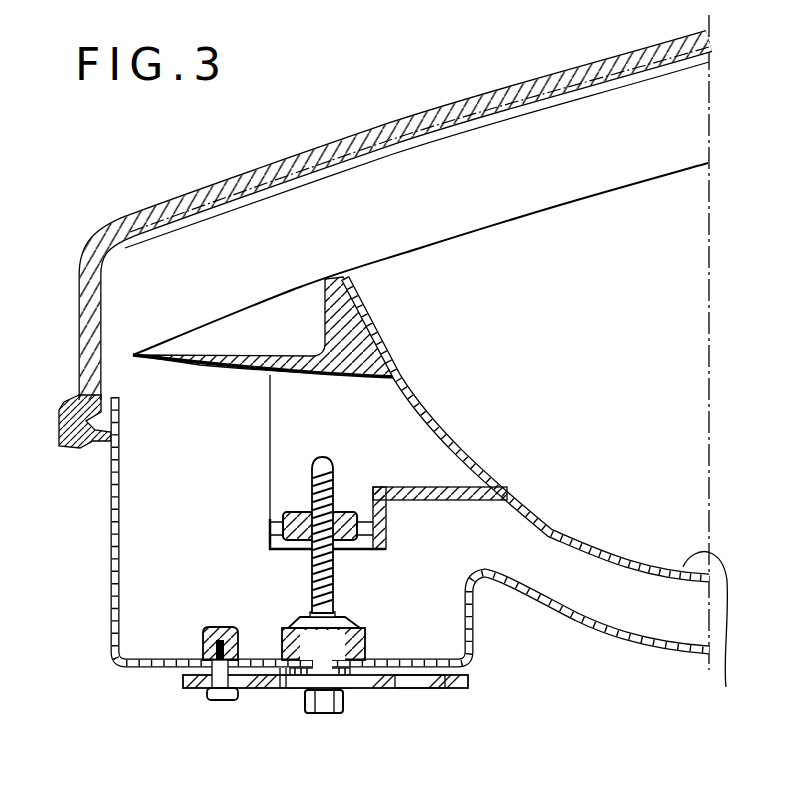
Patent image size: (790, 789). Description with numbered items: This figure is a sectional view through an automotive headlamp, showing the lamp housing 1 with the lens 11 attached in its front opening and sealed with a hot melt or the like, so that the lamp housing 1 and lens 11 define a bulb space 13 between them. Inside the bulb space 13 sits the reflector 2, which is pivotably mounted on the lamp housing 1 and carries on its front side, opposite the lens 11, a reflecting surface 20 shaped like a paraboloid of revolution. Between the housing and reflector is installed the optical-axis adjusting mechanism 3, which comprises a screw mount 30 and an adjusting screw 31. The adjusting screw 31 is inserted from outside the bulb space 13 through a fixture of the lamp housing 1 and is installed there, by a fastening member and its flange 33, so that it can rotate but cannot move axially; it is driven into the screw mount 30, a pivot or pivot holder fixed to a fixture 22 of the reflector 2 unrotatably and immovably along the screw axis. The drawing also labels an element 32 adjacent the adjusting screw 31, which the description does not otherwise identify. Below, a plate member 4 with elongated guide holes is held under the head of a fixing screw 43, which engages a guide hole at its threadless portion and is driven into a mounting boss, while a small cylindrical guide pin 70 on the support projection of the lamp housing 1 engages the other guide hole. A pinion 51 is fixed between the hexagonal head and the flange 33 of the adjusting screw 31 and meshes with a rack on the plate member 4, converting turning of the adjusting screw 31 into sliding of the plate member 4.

The lamp housing 1 is at (618, 650).
The reflector 2 is at (652, 583).
The optical-axis adjusting mechanism 3 is at (339, 722).
The plate member 4 is at (181, 686).
The lens 11 is at (533, 80).
The bulb space 13 is at (638, 133).
The reflecting surface 20 is at (711, 641).
The fixture 22 is at (387, 518).
The screw mount 30 is at (287, 512).
The adjusting screw 31 is at (308, 713).
The washer 32 is at (340, 612).
The flange 33 is at (343, 694).
The fixing screw 43 is at (212, 694).
The pinion 51 is at (278, 689).
The guide pin 70 is at (423, 689).